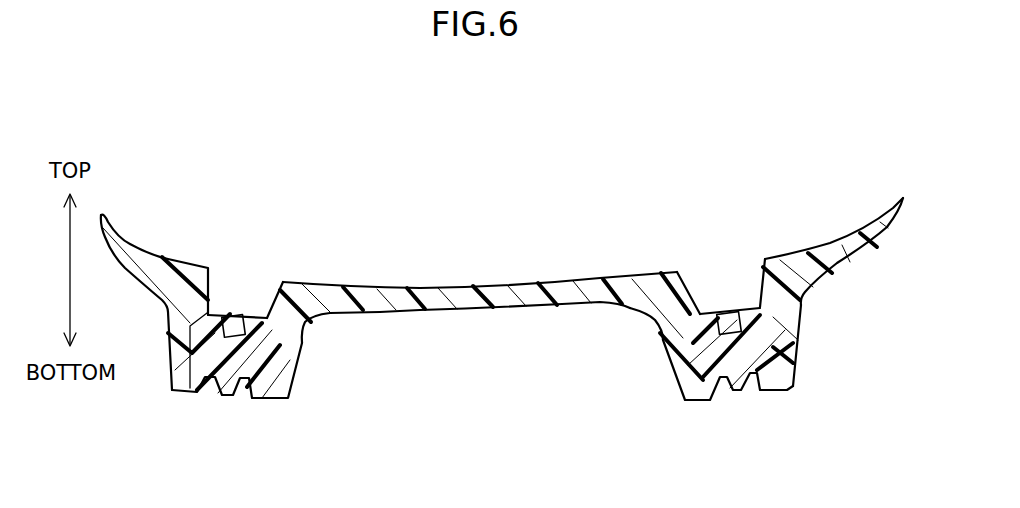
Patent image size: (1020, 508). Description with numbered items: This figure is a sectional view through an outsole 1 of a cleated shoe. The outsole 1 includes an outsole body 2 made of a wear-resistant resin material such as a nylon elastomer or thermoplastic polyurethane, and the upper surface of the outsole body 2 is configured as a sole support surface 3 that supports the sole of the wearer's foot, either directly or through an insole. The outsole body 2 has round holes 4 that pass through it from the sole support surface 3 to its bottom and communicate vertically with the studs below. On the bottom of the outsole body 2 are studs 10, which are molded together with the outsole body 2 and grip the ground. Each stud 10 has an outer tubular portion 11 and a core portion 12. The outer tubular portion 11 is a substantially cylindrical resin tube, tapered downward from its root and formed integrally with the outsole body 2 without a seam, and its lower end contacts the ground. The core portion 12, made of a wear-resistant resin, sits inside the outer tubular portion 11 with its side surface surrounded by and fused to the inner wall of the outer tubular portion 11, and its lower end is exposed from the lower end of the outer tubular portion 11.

The outsole 1 is at (410, 175).
The outsole body 2 is at (395, 282).
The sole support surface 3 is at (490, 281).
The round hole 4 is at (212, 288).
The stud 10 is at (196, 394).
The outer tubular portion 11 is at (180, 355).
The core portion 12 is at (257, 363).